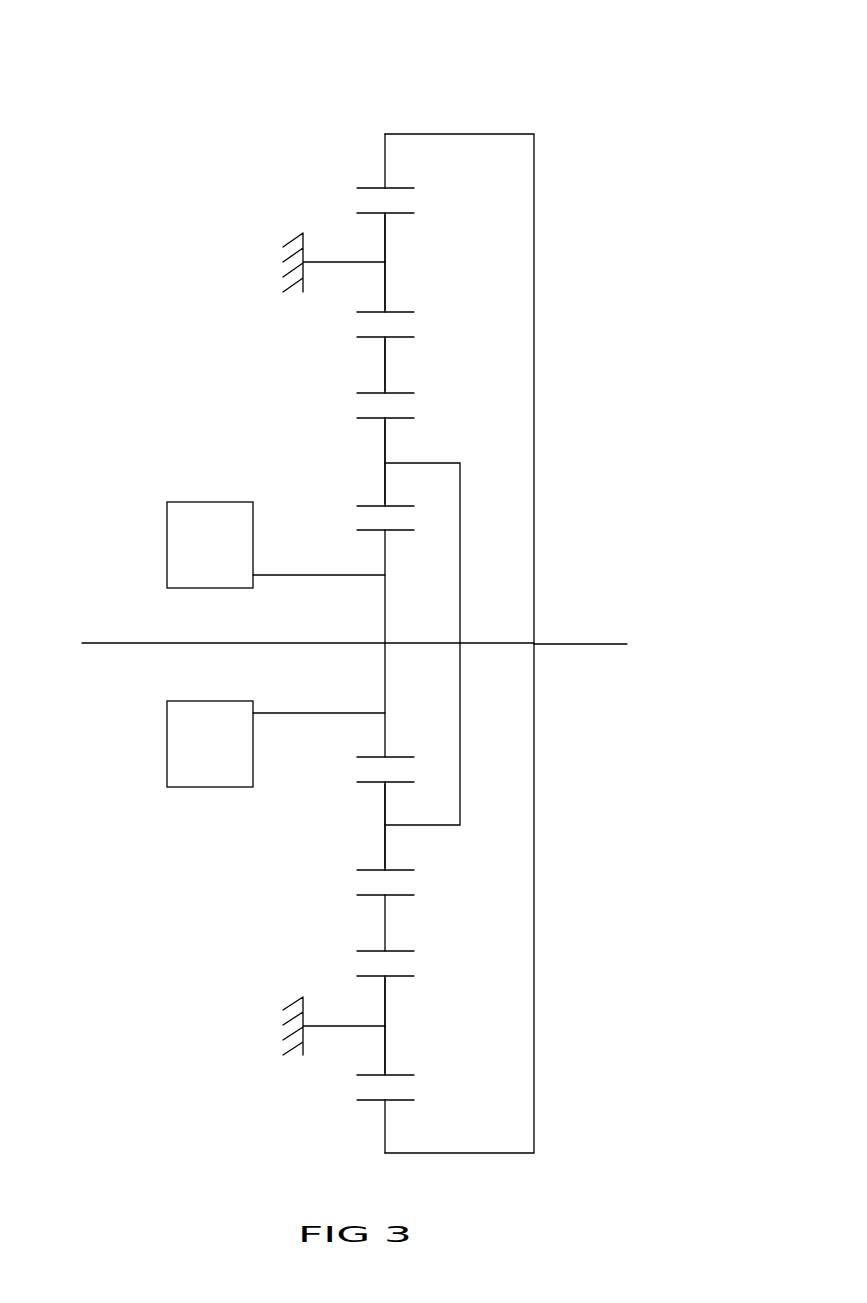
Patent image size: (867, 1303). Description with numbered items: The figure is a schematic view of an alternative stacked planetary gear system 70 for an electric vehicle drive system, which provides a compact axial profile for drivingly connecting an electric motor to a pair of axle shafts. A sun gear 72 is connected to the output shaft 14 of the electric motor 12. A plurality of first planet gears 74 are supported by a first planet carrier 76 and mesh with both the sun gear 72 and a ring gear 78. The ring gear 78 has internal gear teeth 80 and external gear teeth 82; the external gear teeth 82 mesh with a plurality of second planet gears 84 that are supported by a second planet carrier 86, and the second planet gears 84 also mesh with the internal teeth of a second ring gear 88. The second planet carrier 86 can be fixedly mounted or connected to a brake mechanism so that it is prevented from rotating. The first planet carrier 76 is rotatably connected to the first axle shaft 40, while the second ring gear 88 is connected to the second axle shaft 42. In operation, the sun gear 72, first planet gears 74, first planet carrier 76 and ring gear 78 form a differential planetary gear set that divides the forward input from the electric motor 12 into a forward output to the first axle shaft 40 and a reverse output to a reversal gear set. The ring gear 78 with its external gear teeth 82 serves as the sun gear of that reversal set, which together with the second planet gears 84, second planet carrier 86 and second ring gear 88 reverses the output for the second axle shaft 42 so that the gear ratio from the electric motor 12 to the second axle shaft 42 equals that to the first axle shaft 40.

The stacked planetary gear system 70 is at (480, 115).
The second planet gears 84 is at (385, 238).
The external gear teeth 82 is at (398, 311).
The ring gear 78 is at (385, 365).
The internal gear teeth 80 is at (365, 394).
The first planet gears 74 is at (385, 440).
The sun gear 72 is at (370, 530).
The electric motor 12 is at (211, 533).
The output shaft 14 is at (282, 713).
The first axle shaft 40 is at (118, 645).
The second axle shaft 42 is at (603, 644).
The first planet carrier 76 is at (460, 768).
The second planet carrier 86 is at (345, 1027).
The second ring gear 88 is at (370, 1101).